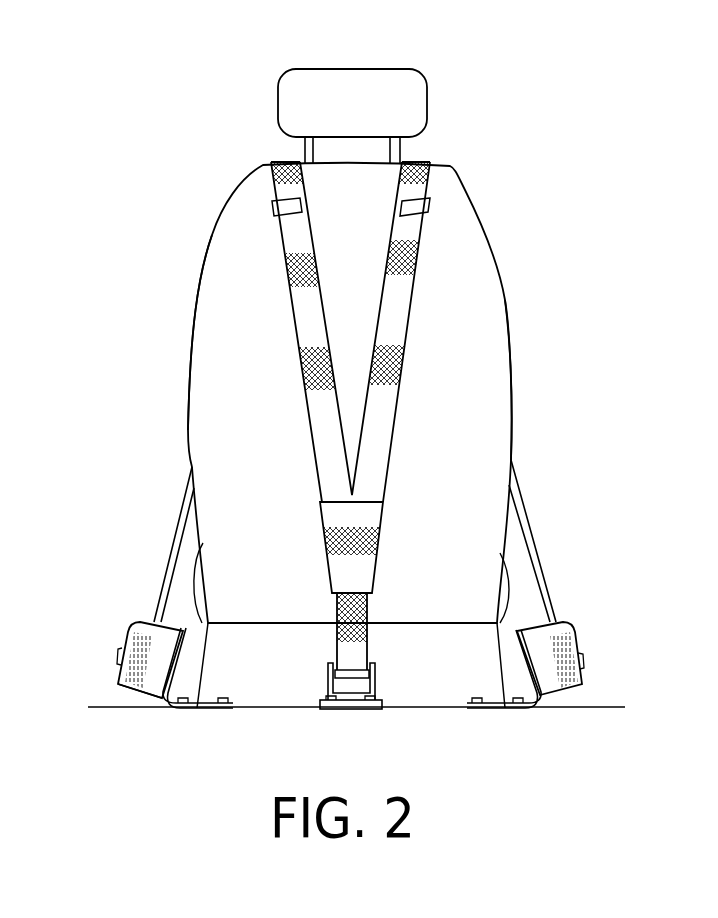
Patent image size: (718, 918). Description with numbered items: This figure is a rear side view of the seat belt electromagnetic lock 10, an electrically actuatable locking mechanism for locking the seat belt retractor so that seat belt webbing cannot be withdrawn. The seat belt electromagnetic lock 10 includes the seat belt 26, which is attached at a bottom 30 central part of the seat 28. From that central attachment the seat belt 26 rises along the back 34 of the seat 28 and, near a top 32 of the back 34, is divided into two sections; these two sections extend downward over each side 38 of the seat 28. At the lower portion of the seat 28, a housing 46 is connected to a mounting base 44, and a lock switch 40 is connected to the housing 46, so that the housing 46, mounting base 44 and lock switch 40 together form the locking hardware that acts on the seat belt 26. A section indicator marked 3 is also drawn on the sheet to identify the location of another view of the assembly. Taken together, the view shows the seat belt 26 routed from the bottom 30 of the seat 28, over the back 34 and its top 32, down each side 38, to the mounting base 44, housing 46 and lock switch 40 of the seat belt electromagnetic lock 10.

The seat belt electromagnetic lock 10 is at (535, 115).
The seat belt 26 is at (298, 240).
The seat 28 is at (468, 277).
The bottom 30 is at (430, 705).
The top 32 is at (450, 167).
The back 34 is at (443, 457).
The side 38 is at (195, 312).
The lock switch 40 is at (120, 653).
The mounting base 44 is at (203, 712).
The housing 46 is at (143, 678).
The section view indicator 3 is at (0, 562).